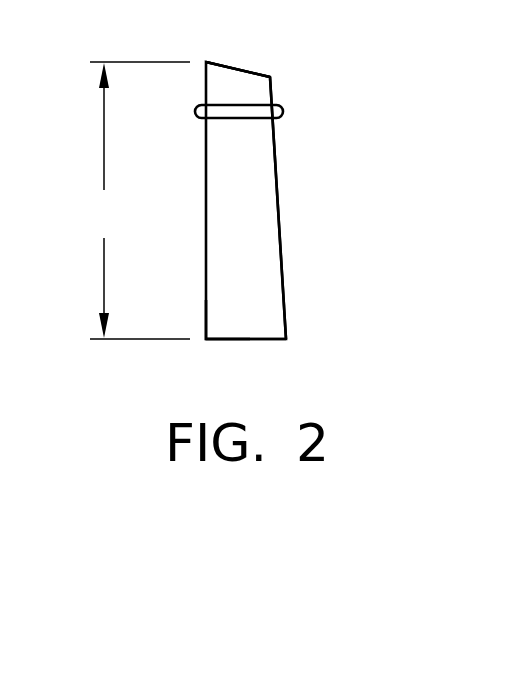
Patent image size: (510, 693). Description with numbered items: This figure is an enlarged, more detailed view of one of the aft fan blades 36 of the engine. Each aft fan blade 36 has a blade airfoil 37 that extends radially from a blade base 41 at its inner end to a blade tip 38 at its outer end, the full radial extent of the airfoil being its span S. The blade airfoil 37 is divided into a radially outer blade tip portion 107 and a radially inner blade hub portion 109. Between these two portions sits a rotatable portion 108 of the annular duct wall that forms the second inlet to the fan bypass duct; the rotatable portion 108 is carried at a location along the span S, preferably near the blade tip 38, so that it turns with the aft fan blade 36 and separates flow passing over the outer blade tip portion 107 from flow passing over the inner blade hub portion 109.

The span S is at (140, 200).
The blade airfoil 37 is at (224, 231).
The outer blade tip portion 107 is at (225, 82).
The blade tip 38 is at (240, 66).
The rotatable portion 108 is at (258, 105).
The radially inner blade hub portion 109 is at (263, 268).
The blade base 41 is at (218, 338).
The aft fan blade 36 is at (248, 339).